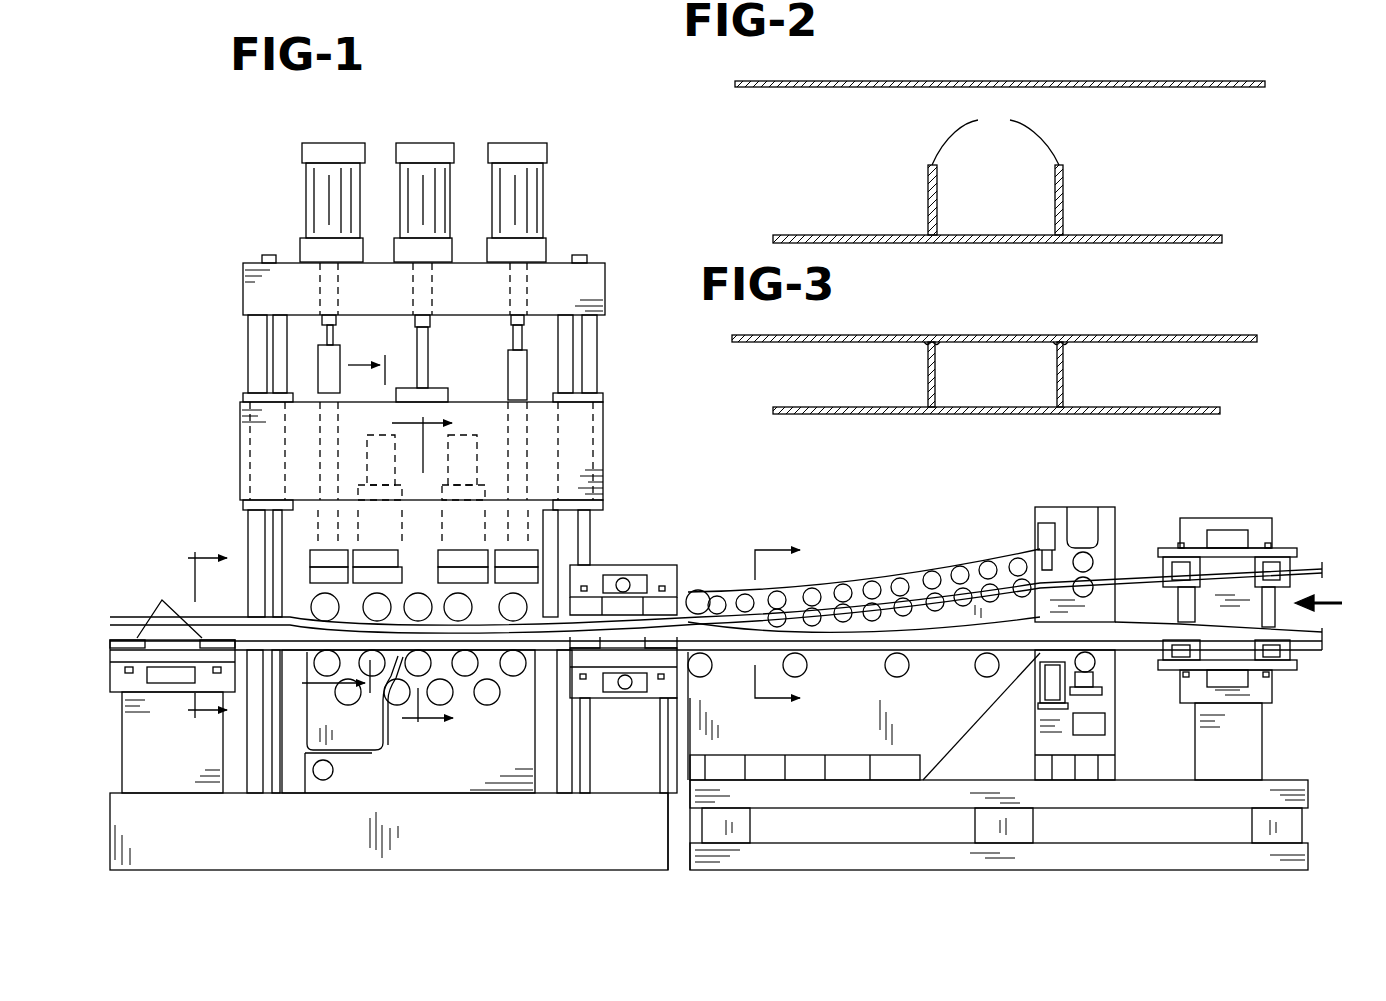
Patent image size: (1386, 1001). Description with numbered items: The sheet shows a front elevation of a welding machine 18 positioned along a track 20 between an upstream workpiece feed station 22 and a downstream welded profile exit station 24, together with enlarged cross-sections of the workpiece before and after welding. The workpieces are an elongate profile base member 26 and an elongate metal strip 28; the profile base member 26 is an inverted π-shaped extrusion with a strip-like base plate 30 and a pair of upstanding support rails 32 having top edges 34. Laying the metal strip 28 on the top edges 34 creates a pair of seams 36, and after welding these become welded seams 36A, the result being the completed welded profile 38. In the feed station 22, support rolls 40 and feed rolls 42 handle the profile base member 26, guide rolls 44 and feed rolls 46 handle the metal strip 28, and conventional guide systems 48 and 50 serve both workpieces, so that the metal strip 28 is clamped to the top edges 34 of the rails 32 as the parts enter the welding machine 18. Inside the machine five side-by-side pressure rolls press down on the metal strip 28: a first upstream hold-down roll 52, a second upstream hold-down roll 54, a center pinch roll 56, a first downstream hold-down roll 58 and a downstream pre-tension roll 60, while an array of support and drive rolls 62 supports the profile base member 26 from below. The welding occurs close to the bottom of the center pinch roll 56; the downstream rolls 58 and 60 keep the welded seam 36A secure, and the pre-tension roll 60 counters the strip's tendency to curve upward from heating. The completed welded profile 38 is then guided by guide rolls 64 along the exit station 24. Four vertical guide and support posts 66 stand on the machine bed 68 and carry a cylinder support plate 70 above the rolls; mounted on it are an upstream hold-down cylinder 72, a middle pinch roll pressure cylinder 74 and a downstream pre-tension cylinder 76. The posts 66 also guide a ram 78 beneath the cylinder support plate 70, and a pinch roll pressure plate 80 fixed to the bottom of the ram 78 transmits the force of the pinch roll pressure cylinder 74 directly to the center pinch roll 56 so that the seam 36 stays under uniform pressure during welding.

In FIG. 1, the welding machine 18 is at (460, 108).
In FIG. 1, the track 20 is at (873, 662).
In FIG. 1, the upstream workpiece feed station 22 is at (1128, 500).
In FIG. 1, the downstream welded profile exit station 24 is at (118, 600).
In FIG. 1, the profile base member 26 is at (1305, 660).
In FIG. 2, the profile base member 26 is at (1163, 233).
In FIG. 1, the metal strip 28 is at (1307, 566).
In FIG. 2, the metal strip 28 is at (1002, 80).
In FIG. 2, the base plate 30 is at (810, 235).
In FIG. 3, the base plate 30 is at (820, 407).
In FIG. 2, the support rails 32 is at (928, 183).
In FIG. 3, the support rails 32 is at (1057, 373).
In FIG. 2, the top edges 34 is at (995, 135).
In FIG. 3, the seams 36 is at (927, 347).
In FIG. 3, the welded seam 36A is at (1063, 345).
In FIG. 3, the completed welded profile 38 is at (1173, 333).
In FIG. 1, the support rolls 40 is at (710, 672).
In FIG. 1, the feed rolls 42 is at (1090, 662).
In FIG. 1, the guide rolls 44 is at (930, 577).
In FIG. 1, the feed rolls 46 is at (1088, 587).
In FIG. 1, the guide system 48 is at (1223, 515).
In FIG. 1, the guide system 50 is at (650, 556).
In FIG. 1, the first upstream hold-down roll 52 is at (515, 600).
In FIG. 1, the second upstream hold-down roll 54 is at (460, 602).
In FIG. 1, the center pinch roll 56 is at (418, 598).
In FIG. 1, the first downstream hold-down roll 58 is at (377, 602).
In FIG. 1, the downstream pre-tension roll 60 is at (313, 595).
In FIG. 1, the support and drive rolls 62 is at (490, 695).
In FIG. 1, the guide rolls 64 is at (172, 680).
In FIG. 1, the guide and support posts 66 is at (253, 335).
In FIG. 1, the machine bed 68 is at (268, 843).
In FIG. 1, the cylinder support plate 70 is at (243, 270).
In FIG. 1, the upstream hold-down cylinder 72 is at (515, 143).
In FIG. 1, the pinch roll pressure cylinder 74 is at (417, 143).
In FIG. 1, the downstream pre-tension cylinder 76 is at (317, 143).
In FIG. 1, the ram 78 is at (265, 433).
In FIG. 1, the pinch roll pressure plate 80 is at (310, 525).